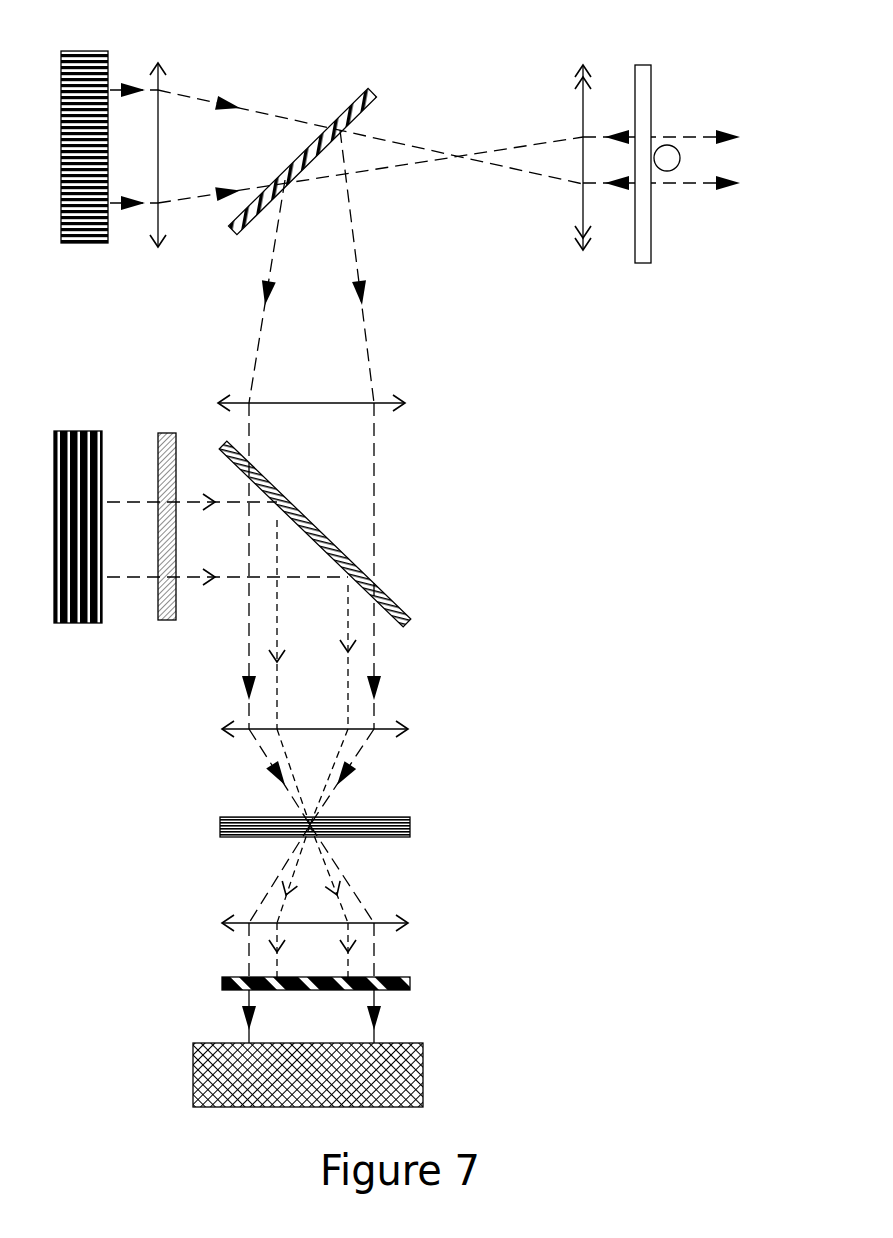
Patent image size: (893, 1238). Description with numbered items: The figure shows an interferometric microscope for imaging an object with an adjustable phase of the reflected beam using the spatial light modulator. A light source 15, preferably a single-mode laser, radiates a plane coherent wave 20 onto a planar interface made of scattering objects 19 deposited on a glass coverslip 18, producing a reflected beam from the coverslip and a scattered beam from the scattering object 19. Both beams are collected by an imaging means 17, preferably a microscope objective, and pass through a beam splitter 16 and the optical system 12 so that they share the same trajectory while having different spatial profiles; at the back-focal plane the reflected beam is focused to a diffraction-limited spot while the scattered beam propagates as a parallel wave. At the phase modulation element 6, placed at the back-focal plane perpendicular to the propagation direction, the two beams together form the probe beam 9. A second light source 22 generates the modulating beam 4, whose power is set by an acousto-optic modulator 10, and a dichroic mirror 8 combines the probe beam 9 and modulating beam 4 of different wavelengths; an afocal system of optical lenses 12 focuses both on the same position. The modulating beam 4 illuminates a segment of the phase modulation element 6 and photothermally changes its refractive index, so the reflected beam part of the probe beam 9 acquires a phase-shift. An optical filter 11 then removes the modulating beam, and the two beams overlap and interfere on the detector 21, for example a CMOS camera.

The modulating beam 4 is at (227, 629).
The phase modulation element 6 is at (410, 826).
The dichroic mirror 8 is at (407, 622).
The probe beam 9 is at (376, 470).
The acousto-optic modulator 10 is at (167, 620).
The optical filter 11 is at (410, 978).
The optical lenses 12 is at (406, 404).
The light source 15 is at (79, 243).
The beam splitter 16 is at (356, 96).
The imaging means 17 is at (583, 250).
The glass coverslip 18 is at (643, 263).
The scattering object 19 is at (673, 170).
The plane coherent wave 20 is at (714, 187).
The detector 21 is at (423, 1080).
The light source 22 is at (78, 623).